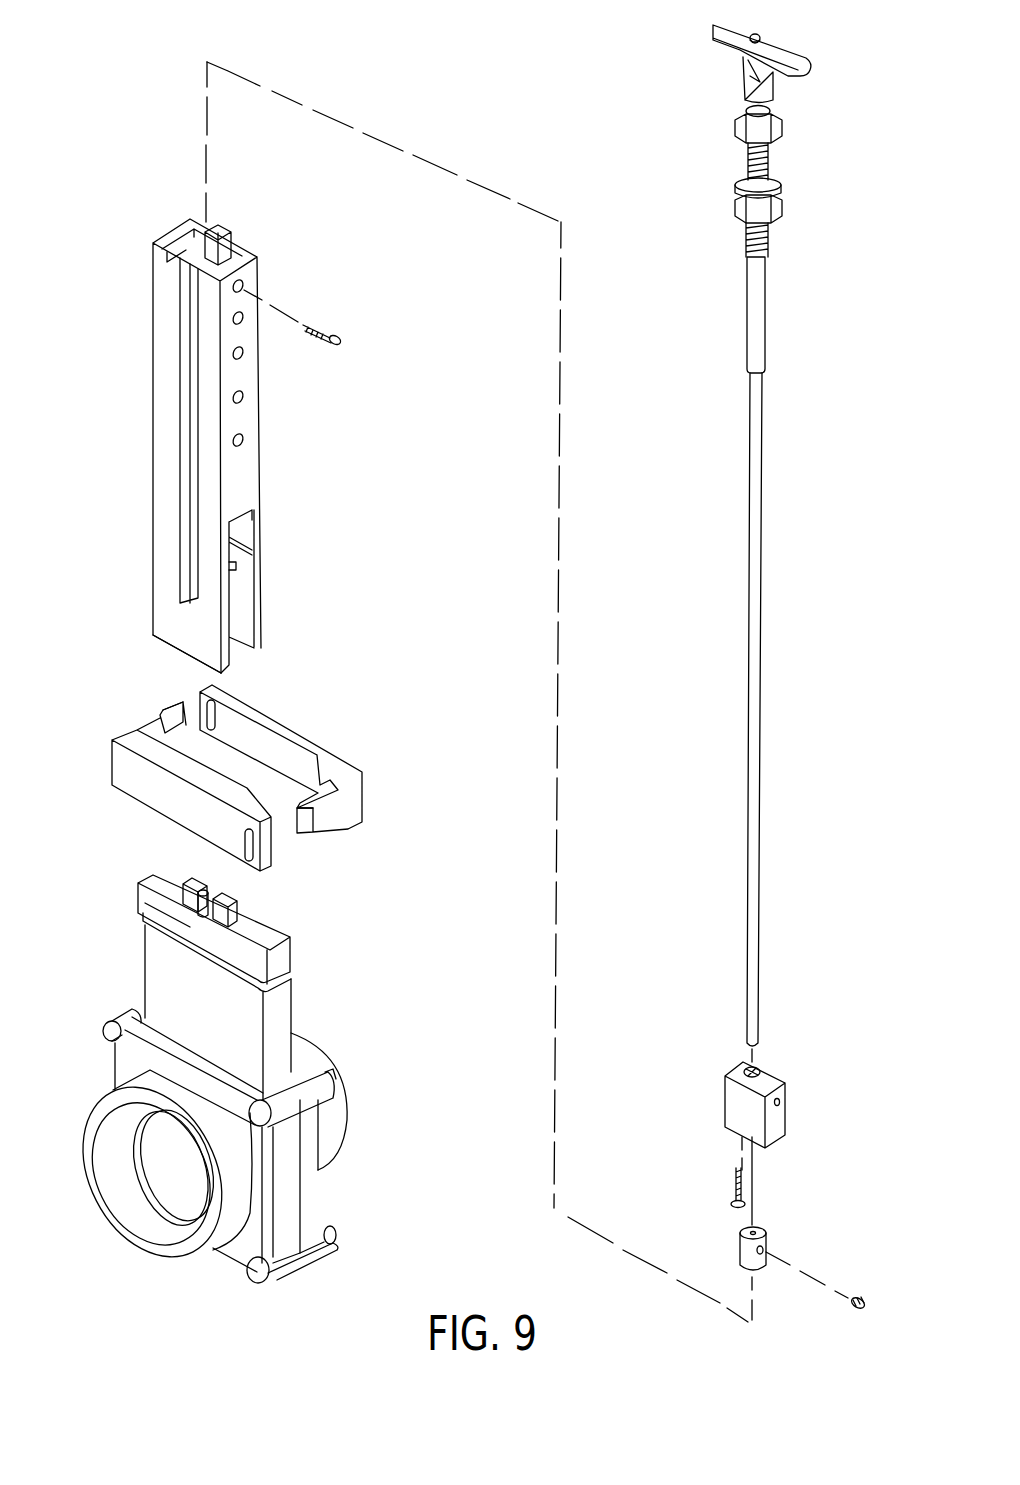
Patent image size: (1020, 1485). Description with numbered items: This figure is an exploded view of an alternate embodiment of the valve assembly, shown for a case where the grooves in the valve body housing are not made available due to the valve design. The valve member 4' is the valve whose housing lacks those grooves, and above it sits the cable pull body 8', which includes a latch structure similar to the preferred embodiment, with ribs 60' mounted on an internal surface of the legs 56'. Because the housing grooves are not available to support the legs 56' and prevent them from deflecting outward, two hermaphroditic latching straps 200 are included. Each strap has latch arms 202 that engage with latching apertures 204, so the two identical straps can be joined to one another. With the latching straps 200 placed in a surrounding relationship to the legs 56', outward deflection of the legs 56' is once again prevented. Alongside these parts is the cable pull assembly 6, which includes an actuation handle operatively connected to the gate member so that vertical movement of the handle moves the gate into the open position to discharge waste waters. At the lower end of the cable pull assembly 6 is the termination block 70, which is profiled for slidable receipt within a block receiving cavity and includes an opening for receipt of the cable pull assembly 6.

The cable pull body 8' is at (240, 446).
The legs 56' is at (220, 591).
The ribs 60' is at (170, 565).
The hermaphroditic latching straps 200 is at (280, 719).
The latch arms 202 is at (178, 707).
The latching apertures 204 is at (212, 718).
The valve member 4' is at (227, 1079).
The cable pull assembly 6 is at (763, 748).
The termination block 70 is at (776, 1113).